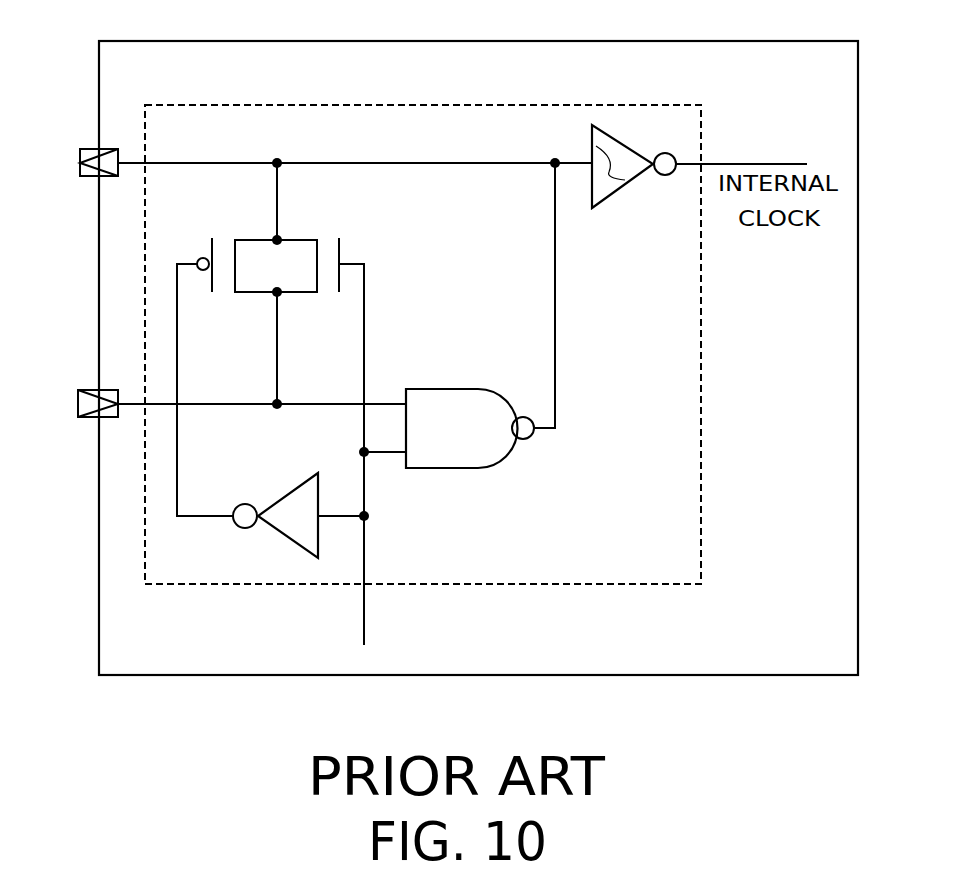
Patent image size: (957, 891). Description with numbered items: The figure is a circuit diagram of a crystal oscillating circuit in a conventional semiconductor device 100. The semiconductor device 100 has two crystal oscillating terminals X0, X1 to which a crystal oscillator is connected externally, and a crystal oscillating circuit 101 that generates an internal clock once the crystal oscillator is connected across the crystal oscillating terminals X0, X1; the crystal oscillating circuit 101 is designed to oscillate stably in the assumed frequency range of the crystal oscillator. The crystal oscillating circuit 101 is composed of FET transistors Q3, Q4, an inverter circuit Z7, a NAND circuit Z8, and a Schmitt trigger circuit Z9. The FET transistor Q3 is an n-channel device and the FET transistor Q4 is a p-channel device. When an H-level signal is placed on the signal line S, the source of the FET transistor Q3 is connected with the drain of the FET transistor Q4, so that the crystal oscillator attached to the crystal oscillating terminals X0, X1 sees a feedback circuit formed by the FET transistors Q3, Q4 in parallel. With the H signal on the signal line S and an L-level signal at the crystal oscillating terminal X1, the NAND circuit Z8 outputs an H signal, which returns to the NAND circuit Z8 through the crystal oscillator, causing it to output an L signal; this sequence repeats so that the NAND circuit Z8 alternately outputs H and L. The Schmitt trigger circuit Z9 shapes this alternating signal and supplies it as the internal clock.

The semiconductor device 100 is at (210, 41).
The crystal oscillating circuit 101 is at (255, 105).
The crystal oscillating terminal X0 is at (77, 163).
The crystal oscillating terminal X1 is at (77, 403).
The FET transistor Q3 is at (324, 252).
The FET transistor Q4 is at (257, 252).
The inverter circuit Z7 is at (300, 547).
The NAND circuit Z8 is at (425, 389).
The Schmitt trigger circuit Z9 is at (619, 195).
The signal line S is at (366, 612).